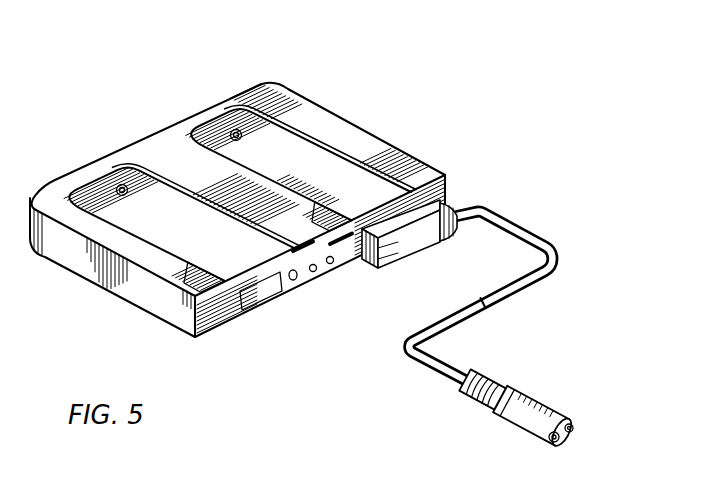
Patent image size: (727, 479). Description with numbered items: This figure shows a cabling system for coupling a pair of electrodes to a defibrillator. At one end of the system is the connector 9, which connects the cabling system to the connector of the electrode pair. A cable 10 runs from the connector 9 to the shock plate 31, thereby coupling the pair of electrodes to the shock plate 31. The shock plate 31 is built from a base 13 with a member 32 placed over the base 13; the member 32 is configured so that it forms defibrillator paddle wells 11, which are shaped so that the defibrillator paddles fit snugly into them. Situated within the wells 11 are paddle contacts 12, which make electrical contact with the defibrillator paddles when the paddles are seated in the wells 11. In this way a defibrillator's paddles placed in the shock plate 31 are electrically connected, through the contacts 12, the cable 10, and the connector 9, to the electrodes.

The connector 9 is at (554, 405).
The cable 10 is at (549, 244).
The defibrillator paddle wells 11 is at (253, 153).
The paddle contacts 12 is at (117, 183).
The base 13 is at (84, 278).
The shock plate 31 is at (237, 183).
The member 32 is at (314, 107).